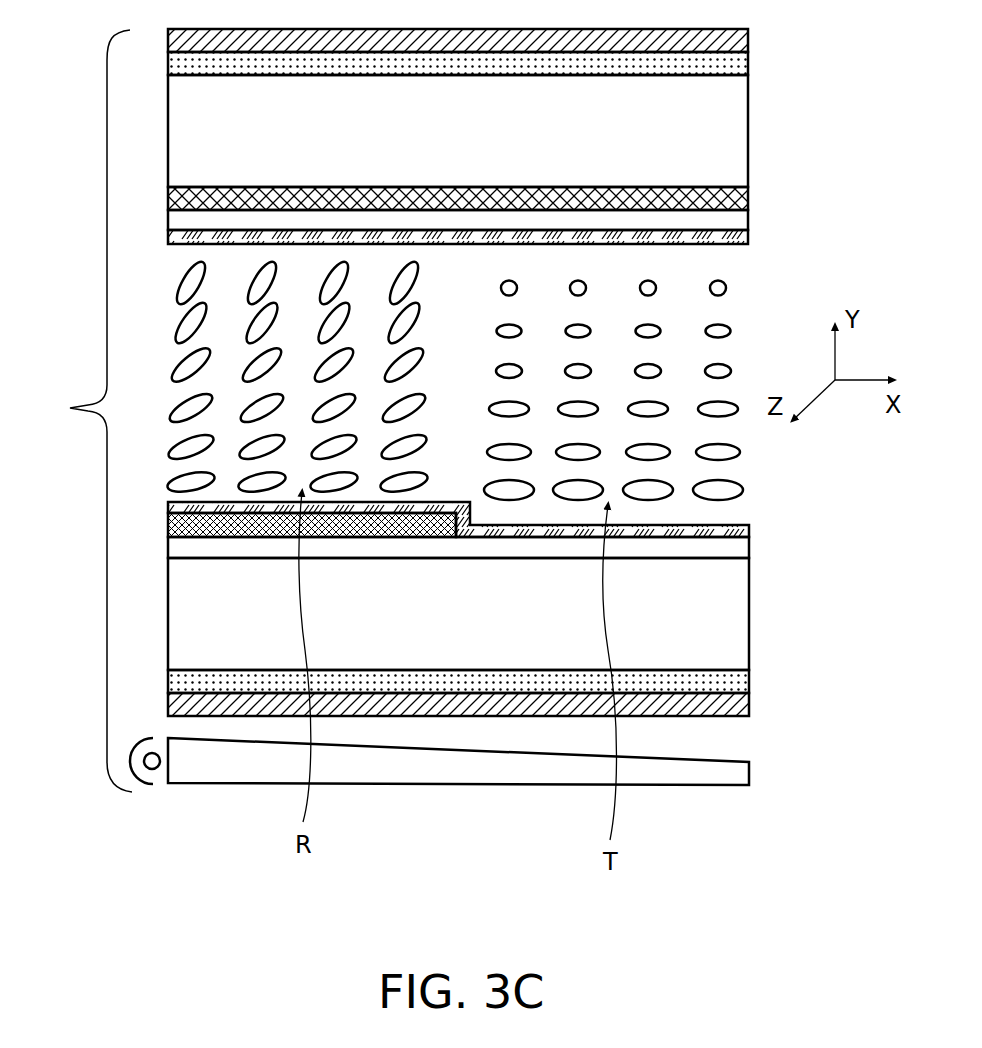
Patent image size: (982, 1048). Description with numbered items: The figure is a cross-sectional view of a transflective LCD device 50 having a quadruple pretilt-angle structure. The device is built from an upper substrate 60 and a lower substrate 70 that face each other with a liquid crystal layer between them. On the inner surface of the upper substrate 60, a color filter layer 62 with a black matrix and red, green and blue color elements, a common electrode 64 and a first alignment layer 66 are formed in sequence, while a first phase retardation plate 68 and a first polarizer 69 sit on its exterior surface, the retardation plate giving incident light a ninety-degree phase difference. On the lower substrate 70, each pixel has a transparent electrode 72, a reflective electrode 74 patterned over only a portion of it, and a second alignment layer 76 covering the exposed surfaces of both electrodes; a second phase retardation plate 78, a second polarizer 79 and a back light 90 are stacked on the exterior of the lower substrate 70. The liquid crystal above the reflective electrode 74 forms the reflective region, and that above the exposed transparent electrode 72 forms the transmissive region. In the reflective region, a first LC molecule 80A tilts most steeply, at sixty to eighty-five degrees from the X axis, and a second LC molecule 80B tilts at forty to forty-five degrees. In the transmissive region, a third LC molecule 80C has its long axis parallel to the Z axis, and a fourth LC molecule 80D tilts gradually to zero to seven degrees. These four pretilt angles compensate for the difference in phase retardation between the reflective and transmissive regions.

The transflective LCD device 50 is at (55, 427).
The upper substrate 60 is at (732, 141).
The color filter layer 62 is at (750, 199).
The common electrode 64 is at (732, 221).
The first alignment layer 66 is at (750, 243).
The first phase retardation plate 68 is at (752, 68).
The first polarizer 69 is at (750, 44).
The lower substrate 70 is at (732, 627).
The transparent electrode 72 is at (732, 554).
The reflective electrode 74 is at (166, 524).
The second alignment layer 76 is at (732, 529).
The second phase retardation plate 78 is at (732, 681).
The second polarizer 79 is at (732, 709).
The first LC molecule 80A is at (182, 291).
The second LC molecule 80B is at (178, 452).
The third LC molecule 80C is at (726, 288).
The fourth LC molecule 80D is at (722, 452).
The back light 90 is at (732, 777).